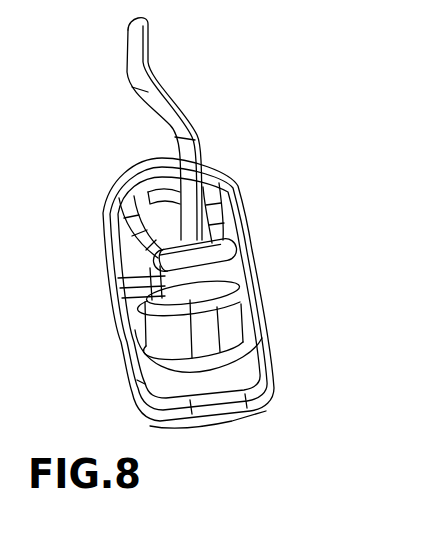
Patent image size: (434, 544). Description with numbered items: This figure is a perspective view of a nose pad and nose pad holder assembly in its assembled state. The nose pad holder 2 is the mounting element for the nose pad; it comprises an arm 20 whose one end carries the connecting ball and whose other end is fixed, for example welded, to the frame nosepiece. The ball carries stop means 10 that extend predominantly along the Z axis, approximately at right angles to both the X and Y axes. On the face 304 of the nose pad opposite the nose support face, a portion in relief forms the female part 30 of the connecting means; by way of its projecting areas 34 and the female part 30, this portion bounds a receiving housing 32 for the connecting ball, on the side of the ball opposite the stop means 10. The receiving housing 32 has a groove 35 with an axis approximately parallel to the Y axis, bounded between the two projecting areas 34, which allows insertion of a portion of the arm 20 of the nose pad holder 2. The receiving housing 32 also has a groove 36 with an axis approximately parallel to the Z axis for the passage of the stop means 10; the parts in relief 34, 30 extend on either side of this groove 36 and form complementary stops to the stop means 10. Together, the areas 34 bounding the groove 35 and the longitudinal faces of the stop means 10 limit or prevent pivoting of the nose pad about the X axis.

The nose pad holder 2 is at (178, 111).
The arm 20 is at (146, 62).
The groove 35 is at (173, 198).
The projecting areas 34 is at (133, 224).
The stop means 10 is at (224, 257).
The groove 36 is at (147, 278).
The receiving housing 32 is at (145, 287).
The female part 30 is at (224, 318).
The face of the nose pad 304 is at (247, 358).